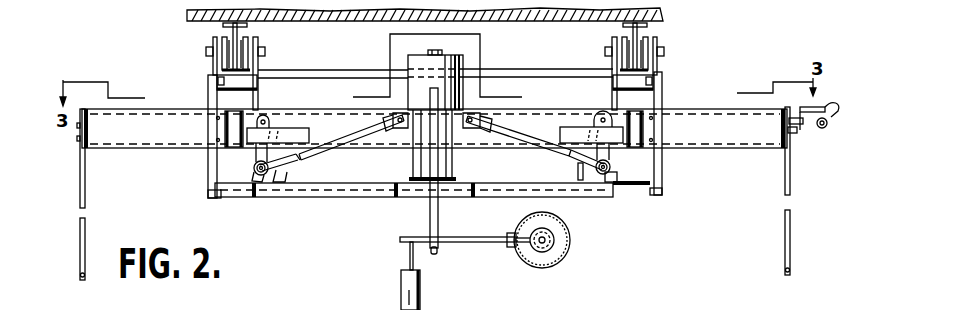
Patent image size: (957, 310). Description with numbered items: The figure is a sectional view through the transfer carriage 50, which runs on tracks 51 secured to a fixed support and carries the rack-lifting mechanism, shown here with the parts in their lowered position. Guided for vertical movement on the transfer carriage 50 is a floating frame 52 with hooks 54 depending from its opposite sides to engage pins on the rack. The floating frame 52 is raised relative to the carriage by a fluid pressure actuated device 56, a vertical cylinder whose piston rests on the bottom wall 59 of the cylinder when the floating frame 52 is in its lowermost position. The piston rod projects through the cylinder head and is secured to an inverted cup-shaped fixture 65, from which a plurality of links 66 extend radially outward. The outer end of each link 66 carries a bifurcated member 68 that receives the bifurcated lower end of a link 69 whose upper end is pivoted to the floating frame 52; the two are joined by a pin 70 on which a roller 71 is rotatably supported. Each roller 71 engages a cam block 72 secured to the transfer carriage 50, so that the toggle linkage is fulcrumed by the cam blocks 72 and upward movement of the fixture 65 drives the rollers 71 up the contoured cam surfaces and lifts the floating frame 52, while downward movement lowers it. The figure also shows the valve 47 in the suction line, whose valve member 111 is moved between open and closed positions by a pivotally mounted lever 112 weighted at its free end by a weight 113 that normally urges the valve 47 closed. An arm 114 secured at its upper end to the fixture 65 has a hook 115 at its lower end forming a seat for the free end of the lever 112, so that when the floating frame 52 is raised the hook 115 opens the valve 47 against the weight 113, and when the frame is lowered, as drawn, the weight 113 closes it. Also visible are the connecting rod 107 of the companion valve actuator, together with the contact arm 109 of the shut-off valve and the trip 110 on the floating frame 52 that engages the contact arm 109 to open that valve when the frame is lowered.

The valve 47 is at (562, 237).
The transfer carriage 50 is at (668, 92).
The tracks 51 is at (637, 27).
The floating frame 52 is at (160, 140).
The hooks 54 is at (84, 230).
The fluid pressure actuated device 56 is at (471, 87).
The bottom wall 59 is at (458, 180).
The inverted cup-shaped fixture 65 is at (448, 67).
The links 66 is at (345, 137).
The bifurcated member 68 is at (289, 162).
The link 69 is at (257, 156).
The pin 70 is at (257, 182).
The roller 71 is at (252, 172).
The cam block 72 is at (280, 178).
The connecting rod 107 is at (821, 133).
The contact arm 109 is at (806, 107).
The trip 110 is at (792, 150).
The valve member 111 is at (553, 250).
The lever 112 is at (485, 243).
The weight 113 is at (408, 289).
The arm 114 is at (432, 210).
The hook 115 is at (435, 254).